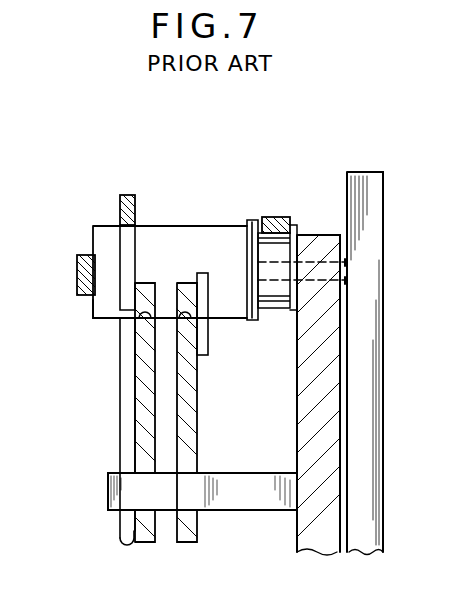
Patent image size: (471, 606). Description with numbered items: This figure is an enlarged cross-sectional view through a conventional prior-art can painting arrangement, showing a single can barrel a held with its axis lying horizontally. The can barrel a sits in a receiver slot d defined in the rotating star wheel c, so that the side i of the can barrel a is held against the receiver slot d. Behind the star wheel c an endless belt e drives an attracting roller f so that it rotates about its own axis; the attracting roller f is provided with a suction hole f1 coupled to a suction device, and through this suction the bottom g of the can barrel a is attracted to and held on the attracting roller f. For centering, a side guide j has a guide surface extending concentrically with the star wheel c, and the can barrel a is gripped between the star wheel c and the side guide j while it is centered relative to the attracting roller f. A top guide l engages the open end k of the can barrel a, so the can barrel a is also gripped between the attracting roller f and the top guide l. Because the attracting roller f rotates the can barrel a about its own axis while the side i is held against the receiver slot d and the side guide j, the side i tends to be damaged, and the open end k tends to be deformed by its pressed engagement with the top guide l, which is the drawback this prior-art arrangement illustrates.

The can barrel a is at (195, 245).
The star wheel c is at (178, 418).
The receiver slot d is at (185, 318).
The endless belt e is at (279, 215).
The attracting roller f is at (280, 305).
The suction hole f1 is at (252, 280).
The bottom g is at (247, 238).
The side i is at (180, 225).
The side guide j is at (120, 205).
The open end k is at (90, 313).
The top guide l is at (77, 262).